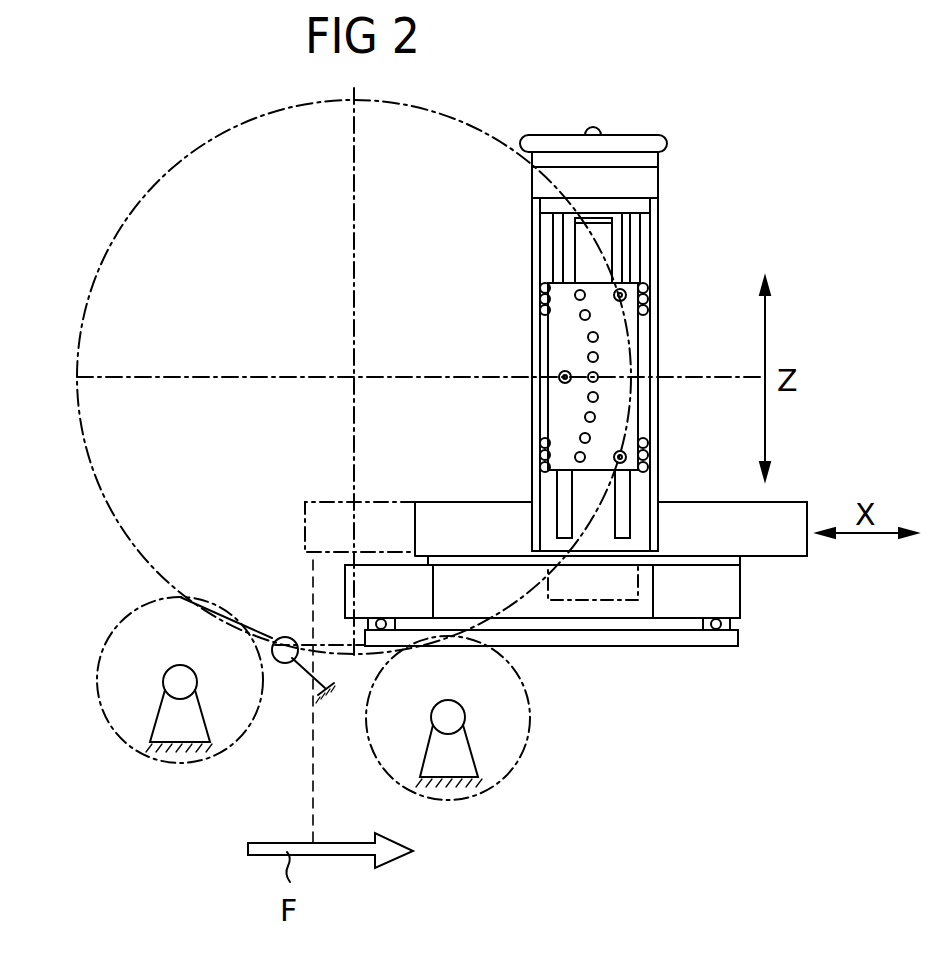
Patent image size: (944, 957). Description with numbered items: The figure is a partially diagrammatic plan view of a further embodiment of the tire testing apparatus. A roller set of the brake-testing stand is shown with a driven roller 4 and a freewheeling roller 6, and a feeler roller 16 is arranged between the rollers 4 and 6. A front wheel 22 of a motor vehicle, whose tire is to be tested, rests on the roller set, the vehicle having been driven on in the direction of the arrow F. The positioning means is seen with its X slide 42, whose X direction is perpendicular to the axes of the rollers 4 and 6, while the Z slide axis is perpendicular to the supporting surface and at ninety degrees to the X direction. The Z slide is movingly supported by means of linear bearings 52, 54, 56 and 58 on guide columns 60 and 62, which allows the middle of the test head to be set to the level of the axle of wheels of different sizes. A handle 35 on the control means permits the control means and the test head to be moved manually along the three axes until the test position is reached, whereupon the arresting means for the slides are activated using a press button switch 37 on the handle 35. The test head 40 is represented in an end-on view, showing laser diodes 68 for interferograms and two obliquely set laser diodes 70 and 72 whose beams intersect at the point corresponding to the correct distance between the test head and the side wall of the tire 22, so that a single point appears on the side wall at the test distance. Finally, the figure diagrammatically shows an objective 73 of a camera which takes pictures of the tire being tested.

The roller 4 is at (145, 625).
The roller 6 is at (515, 718).
The feeler roller 16 is at (285, 665).
The front wheel 22 is at (172, 186).
The handle 35 is at (620, 140).
The press button switch 37 is at (590, 127).
The test head 40 is at (344, 589).
The X slide 42 is at (765, 540).
The linear bearing 52 is at (648, 298).
The linear bearing 54 is at (648, 457).
The linear bearing 56 is at (545, 298).
The linear bearing 58 is at (545, 457).
The guide column 60 is at (627, 233).
The guide column 62 is at (549, 241).
The laser diodes 68 is at (600, 417).
The laser diode 70 is at (624, 292).
The laser diode 72 is at (622, 454).
The objective 73 is at (561, 376).